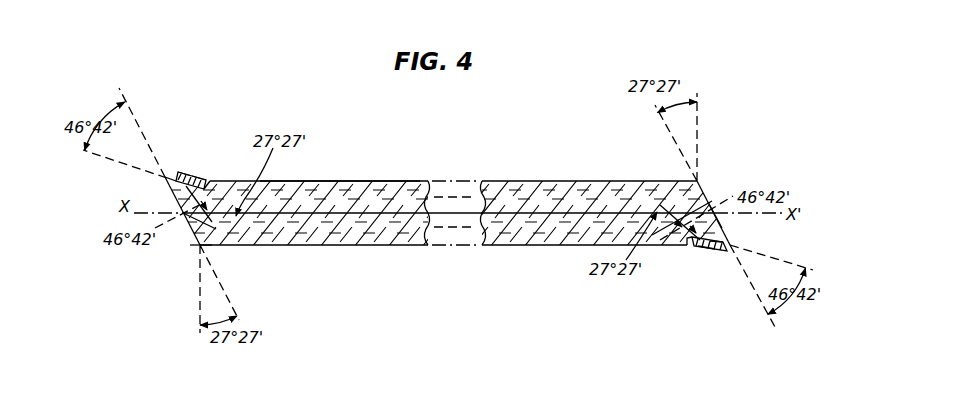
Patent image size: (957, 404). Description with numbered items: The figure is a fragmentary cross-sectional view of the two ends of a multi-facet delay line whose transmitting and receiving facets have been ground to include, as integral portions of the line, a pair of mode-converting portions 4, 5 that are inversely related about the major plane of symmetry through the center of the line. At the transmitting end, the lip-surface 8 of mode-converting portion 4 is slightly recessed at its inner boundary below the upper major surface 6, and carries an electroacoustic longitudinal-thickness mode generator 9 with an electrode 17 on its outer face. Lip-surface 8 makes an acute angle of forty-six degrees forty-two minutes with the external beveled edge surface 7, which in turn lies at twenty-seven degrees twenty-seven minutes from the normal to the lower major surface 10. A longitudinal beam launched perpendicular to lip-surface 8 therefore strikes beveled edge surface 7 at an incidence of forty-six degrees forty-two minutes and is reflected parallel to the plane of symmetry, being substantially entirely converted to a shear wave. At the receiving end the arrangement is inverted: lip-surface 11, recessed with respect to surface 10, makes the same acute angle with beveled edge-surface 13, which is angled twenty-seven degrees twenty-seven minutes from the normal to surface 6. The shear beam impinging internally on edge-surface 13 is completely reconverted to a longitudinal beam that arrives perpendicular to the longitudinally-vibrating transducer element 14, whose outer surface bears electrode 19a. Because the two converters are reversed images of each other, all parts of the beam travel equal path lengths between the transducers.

The mode-converting portion 4 is at (182, 203).
The mode-converting portion 5 is at (722, 226).
The major surface 6 is at (289, 181).
The beveled edge surface 7 is at (198, 246).
The lip-surface 8 is at (179, 173).
The electroacoustic longitudinal-thickness mode generator 9 is at (198, 176).
The lower major surface 10 is at (323, 246).
The lip-surface 11 is at (718, 249).
The beveled edge-surface 13 is at (700, 184).
The transducer element 14 is at (695, 247).
The electrode 17 is at (188, 175).
The electrode 19a is at (706, 251).